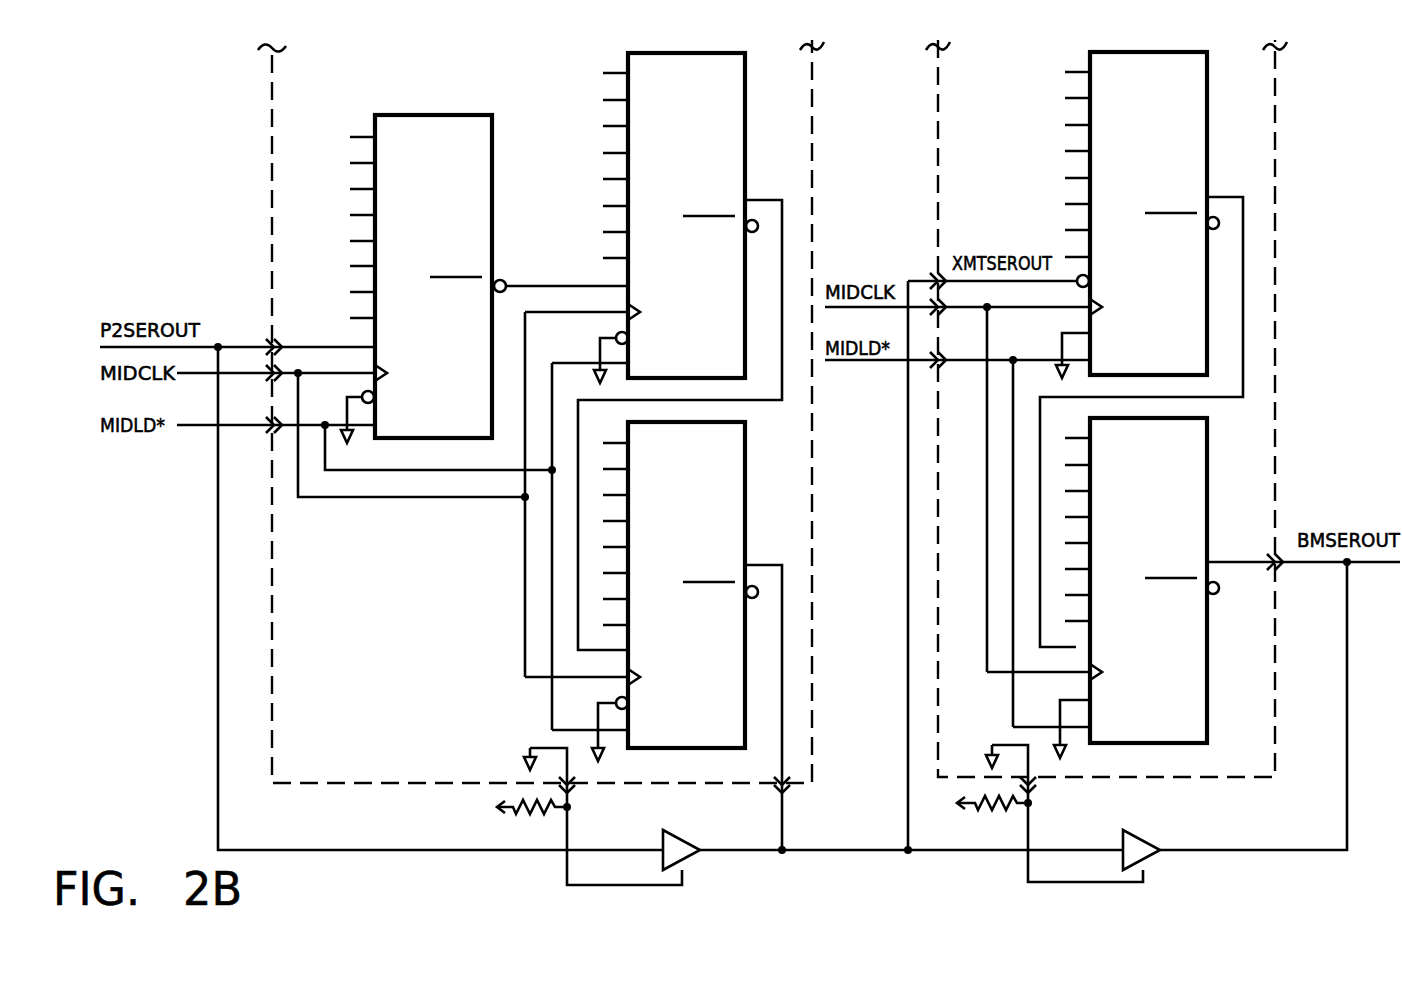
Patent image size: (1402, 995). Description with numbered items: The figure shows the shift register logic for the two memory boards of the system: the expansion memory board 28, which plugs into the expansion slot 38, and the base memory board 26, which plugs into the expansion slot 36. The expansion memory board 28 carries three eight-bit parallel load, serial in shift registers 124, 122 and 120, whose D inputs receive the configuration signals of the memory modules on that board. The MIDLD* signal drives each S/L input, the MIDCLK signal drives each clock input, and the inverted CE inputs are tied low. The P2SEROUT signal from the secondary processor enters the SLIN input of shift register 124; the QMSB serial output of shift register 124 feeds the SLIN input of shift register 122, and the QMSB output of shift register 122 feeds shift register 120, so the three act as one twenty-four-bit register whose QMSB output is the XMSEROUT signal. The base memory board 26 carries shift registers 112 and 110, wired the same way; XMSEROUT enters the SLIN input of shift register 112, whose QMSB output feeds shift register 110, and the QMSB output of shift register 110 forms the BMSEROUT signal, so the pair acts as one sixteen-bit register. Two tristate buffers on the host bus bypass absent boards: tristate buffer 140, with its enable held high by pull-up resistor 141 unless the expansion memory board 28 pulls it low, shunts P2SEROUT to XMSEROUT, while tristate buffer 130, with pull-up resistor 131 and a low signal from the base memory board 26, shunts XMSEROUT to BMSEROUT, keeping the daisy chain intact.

The shift register 124 is at (450, 115).
The shift register 122 is at (745, 112).
The shift register 120 is at (745, 468).
The shift register 112 is at (1207, 110).
The shift register 110 is at (1207, 462).
The tristate buffer 140 is at (698, 842).
The tristate buffer 130 is at (1158, 840).
The pull-up resistor 141 is at (531, 814).
The pull-up resistor 131 is at (992, 811).
The expansion slot 38 is at (266, 343).
The expansion slot 36 is at (933, 278).
The expansion memory board 28 is at (815, 103).
The base memory board 26 is at (1278, 101).